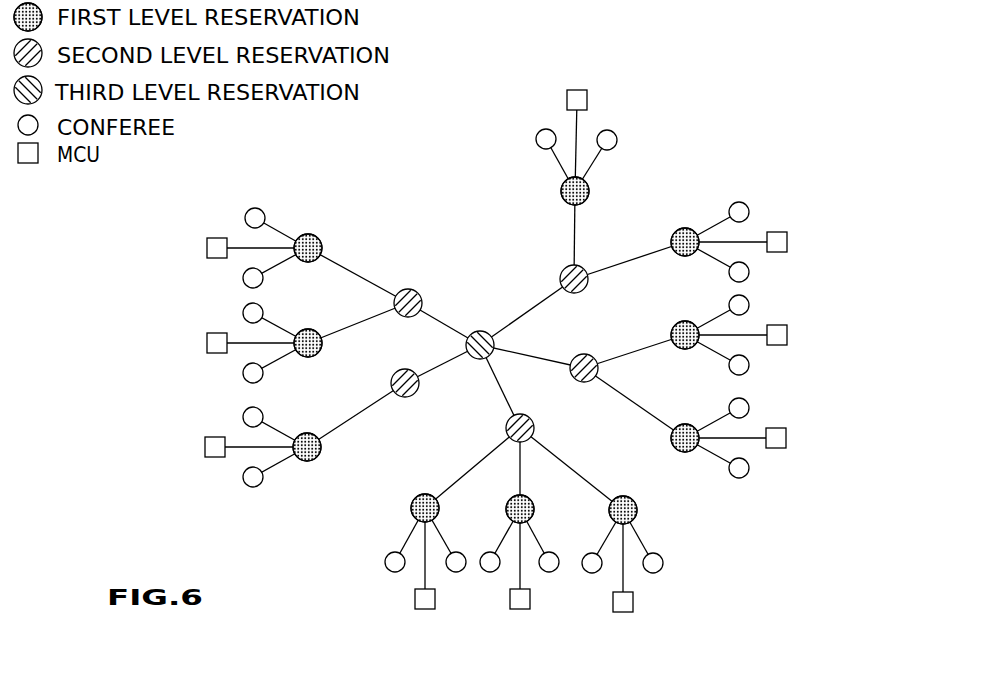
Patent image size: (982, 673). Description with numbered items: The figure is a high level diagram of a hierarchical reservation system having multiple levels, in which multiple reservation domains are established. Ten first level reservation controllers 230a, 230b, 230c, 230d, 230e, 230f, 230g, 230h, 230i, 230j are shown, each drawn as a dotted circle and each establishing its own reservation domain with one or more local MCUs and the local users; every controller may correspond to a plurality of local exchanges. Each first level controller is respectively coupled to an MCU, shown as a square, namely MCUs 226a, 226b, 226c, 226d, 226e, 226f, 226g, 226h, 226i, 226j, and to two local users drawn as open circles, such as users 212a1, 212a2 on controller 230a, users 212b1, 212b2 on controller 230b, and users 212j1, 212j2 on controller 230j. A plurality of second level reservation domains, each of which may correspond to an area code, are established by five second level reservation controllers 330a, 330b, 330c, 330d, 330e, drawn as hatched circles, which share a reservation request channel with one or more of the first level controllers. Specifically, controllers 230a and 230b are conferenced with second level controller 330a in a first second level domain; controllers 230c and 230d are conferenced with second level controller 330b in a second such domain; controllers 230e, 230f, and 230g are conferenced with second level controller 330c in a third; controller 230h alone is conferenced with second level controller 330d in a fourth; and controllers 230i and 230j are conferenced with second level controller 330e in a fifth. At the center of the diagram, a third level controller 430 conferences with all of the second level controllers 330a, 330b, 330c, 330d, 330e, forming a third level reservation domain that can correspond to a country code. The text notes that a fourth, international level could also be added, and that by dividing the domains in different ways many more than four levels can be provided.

The third level controller 430 is at (495, 344).
The second level controller 330a is at (565, 267).
The second level controller 330b is at (597, 376).
The second level controller 330c is at (533, 427).
The second level controller 330d is at (409, 397).
The second level controller 330e is at (413, 290).
The reservation controller 230a is at (588, 190).
The reservation controller 230b is at (672, 233).
The reservation controller 230c is at (672, 324).
The reservation controller 230d is at (672, 450).
The reservation controller 230e is at (637, 512).
The reservation controller 230f is at (507, 496).
The reservation controller 230g is at (412, 516).
The reservation controller 230h is at (300, 462).
The reservation controller 230i is at (305, 357).
The reservation controller 230j is at (318, 238).
The MCU 226a is at (580, 91).
The MCU 226b is at (787, 238).
The MCU 226c is at (787, 331).
The MCU 226d is at (787, 434).
The MCU 226e is at (634, 604).
The MCU 226f is at (531, 604).
The MCU 226g is at (415, 600).
The MCU 226h is at (205, 440).
The MCU 226i is at (207, 338).
The MCU 226j is at (207, 243).
The user 212a1 is at (540, 132).
The user 212a2 is at (614, 132).
The user 212b1 is at (748, 205).
The user 212b2 is at (749, 273).
The user 212j1 is at (250, 209).
The user 212j2 is at (245, 283).